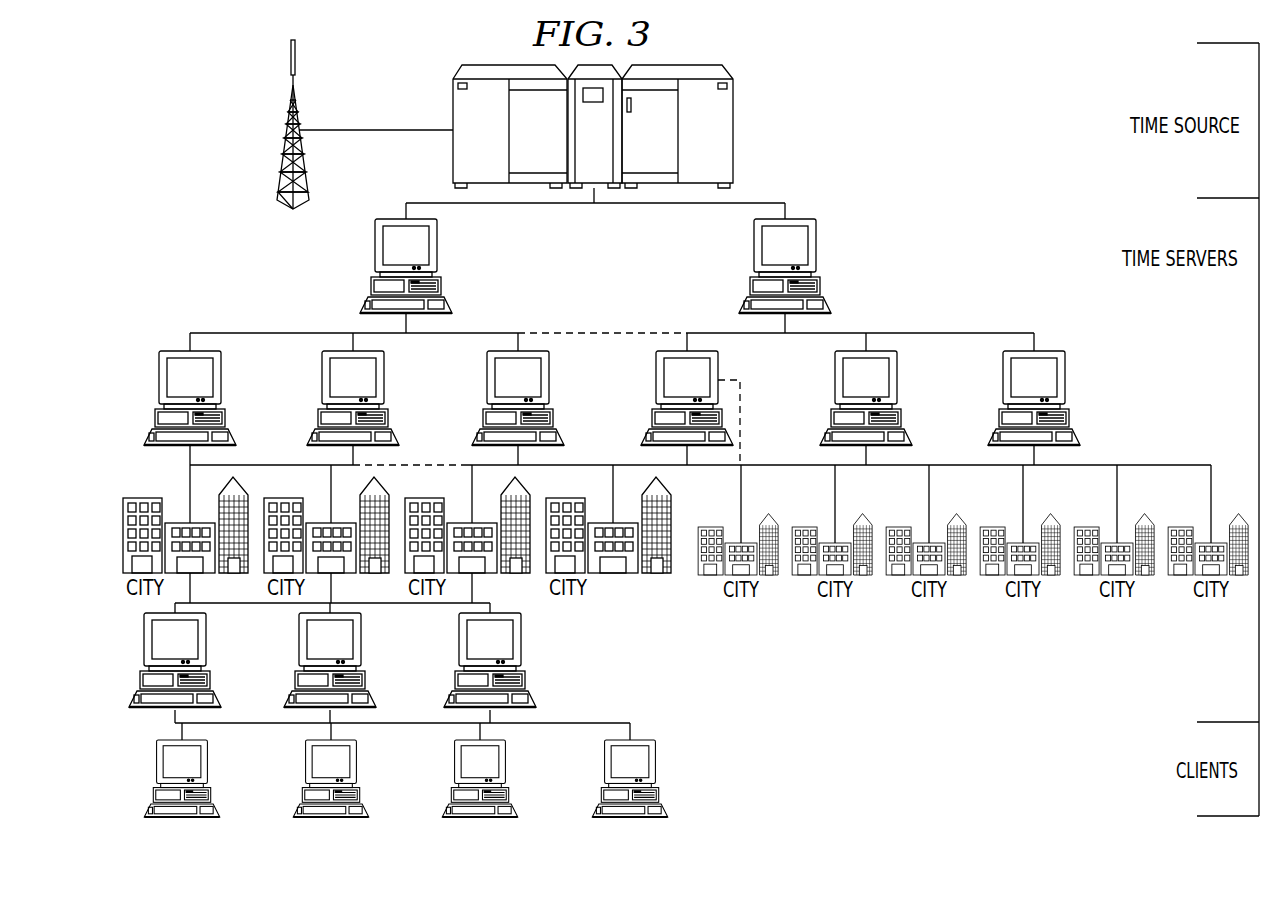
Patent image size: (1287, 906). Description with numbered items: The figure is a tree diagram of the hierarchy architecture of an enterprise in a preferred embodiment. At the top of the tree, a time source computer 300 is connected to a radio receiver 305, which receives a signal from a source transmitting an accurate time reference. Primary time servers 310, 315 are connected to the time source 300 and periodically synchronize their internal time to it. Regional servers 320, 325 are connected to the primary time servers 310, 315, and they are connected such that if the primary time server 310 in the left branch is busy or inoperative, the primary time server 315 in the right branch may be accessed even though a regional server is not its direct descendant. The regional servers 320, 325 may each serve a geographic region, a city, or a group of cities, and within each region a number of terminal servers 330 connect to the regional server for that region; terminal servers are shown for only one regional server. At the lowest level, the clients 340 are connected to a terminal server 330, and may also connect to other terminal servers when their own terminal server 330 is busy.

The time source computer 300 is at (733, 130).
The radio receiver 305 is at (291, 57).
The primary time server 310 is at (375, 245).
The primary time server 315 is at (817, 247).
The regional servers 320 is at (487, 363).
The regional servers 325 is at (656, 363).
The terminal server 330 is at (206, 625).
The clients 340 is at (207, 755).